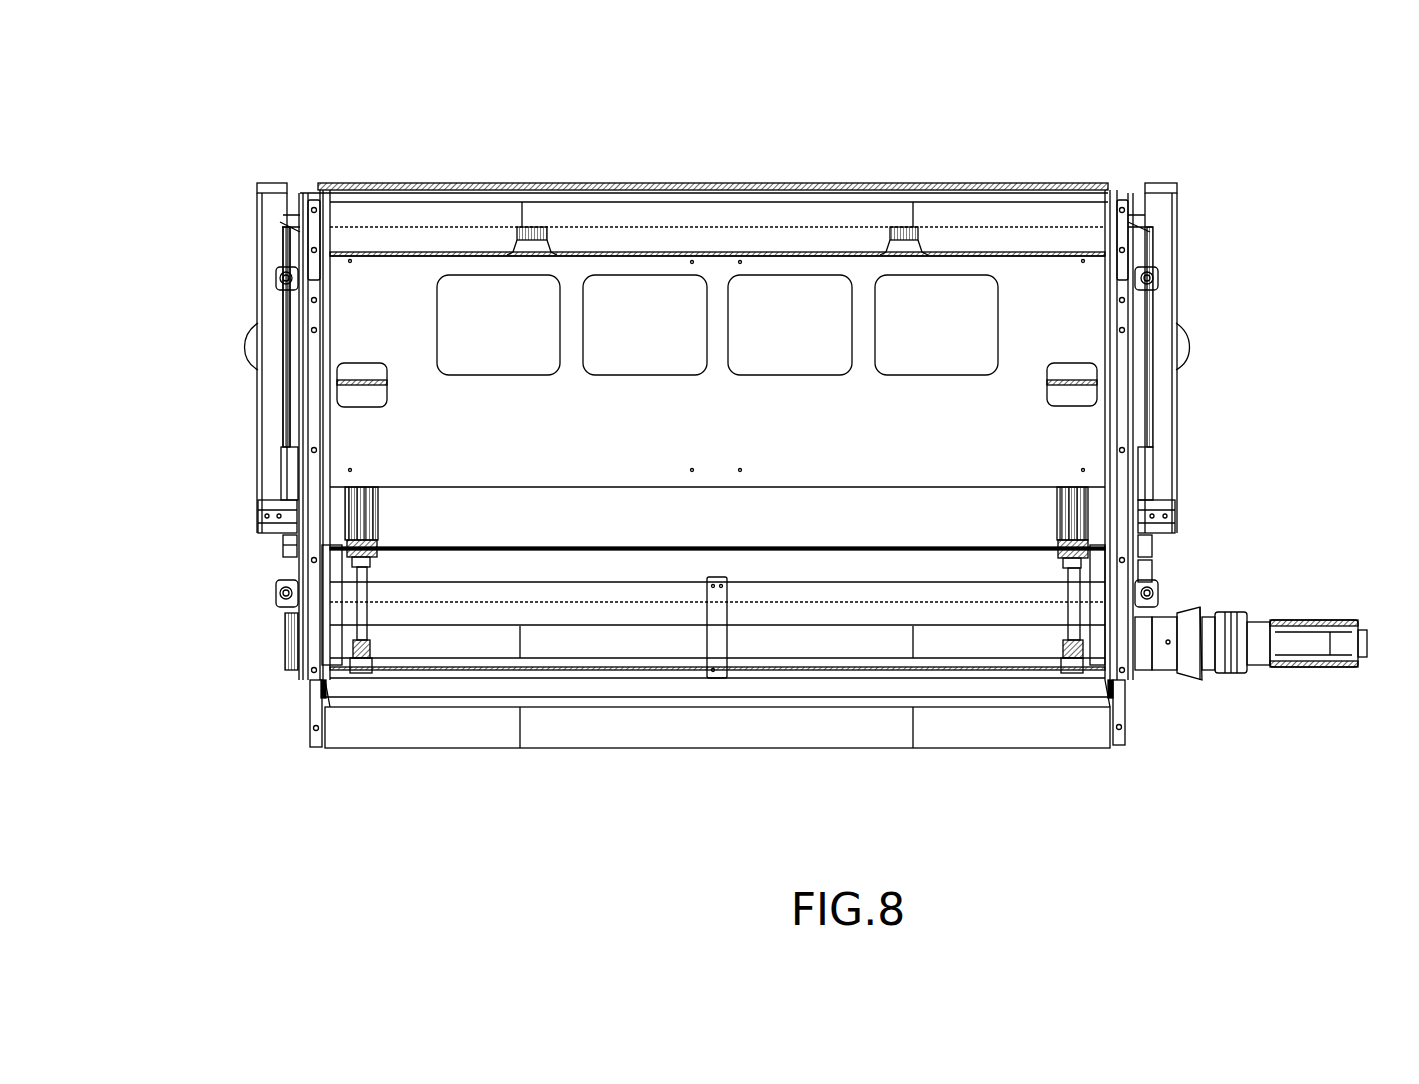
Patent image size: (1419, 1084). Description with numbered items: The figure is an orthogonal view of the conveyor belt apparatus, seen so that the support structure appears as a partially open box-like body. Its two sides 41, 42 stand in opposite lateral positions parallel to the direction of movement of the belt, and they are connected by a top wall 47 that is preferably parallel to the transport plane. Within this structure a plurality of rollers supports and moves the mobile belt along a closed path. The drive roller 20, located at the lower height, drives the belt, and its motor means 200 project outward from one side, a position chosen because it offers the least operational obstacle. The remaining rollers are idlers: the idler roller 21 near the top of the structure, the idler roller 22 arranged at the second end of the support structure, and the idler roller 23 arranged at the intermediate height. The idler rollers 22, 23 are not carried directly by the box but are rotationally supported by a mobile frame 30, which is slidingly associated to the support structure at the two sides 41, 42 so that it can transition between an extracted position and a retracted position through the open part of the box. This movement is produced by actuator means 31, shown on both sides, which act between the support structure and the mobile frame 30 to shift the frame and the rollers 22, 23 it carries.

The drive roller 20 is at (1018, 632).
The idler roller 21 is at (1058, 220).
The idler roller 22 is at (865, 750).
The idler roller 23 is at (477, 600).
The mobile frame 30 is at (388, 687).
The actuator means 31 is at (347, 514).
The side 41 is at (297, 567).
The side 42 is at (1145, 568).
The top wall 47 is at (1028, 298).
The motor means 200 is at (1202, 693).